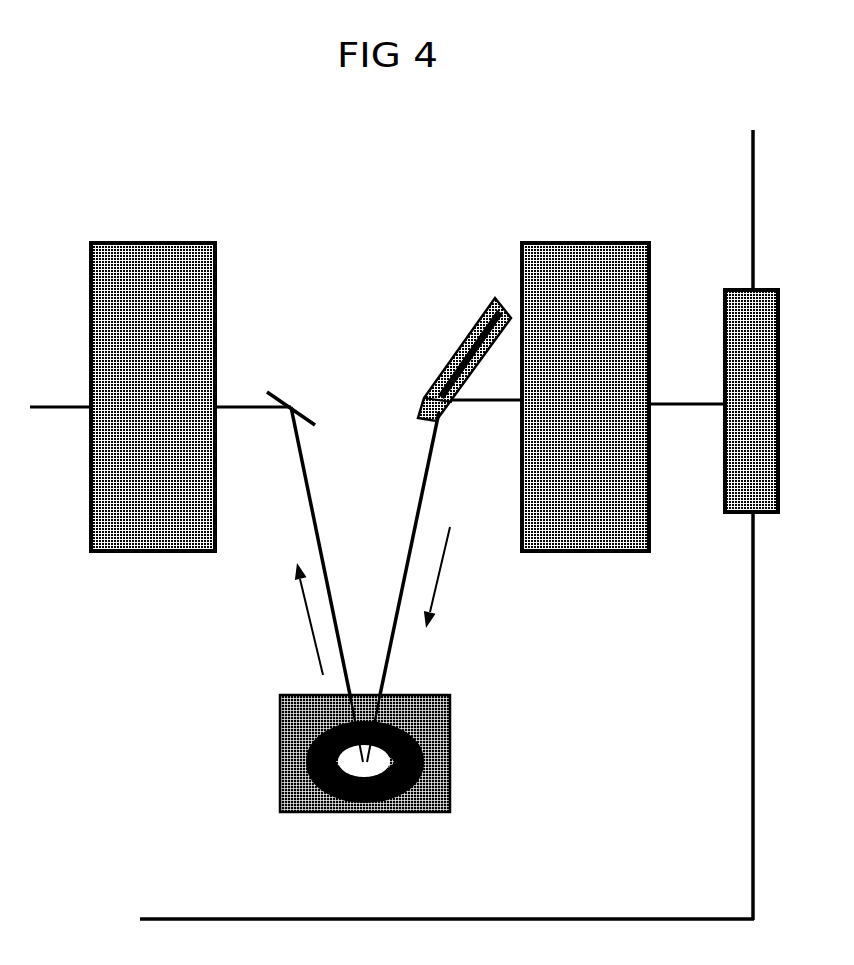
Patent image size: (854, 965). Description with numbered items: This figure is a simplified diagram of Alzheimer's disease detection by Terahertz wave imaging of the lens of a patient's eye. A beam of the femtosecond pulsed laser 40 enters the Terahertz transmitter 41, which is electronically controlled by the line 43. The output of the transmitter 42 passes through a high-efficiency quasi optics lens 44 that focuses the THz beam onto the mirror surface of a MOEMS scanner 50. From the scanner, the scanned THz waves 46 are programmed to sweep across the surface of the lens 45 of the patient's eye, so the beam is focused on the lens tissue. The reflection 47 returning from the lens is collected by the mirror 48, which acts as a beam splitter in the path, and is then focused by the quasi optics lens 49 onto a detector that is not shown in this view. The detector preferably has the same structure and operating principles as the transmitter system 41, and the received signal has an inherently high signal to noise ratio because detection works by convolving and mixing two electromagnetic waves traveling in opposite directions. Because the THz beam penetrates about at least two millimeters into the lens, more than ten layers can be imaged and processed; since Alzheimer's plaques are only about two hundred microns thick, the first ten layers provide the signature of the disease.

The femtosecond pulsed laser beam 40 is at (752, 265).
The Terahertz transmitter 41 is at (757, 497).
The transmitter output 42 is at (672, 405).
The control line 43 is at (672, 910).
The quasi optics lens 44 is at (580, 283).
The lens of the patient's eye 45 is at (450, 695).
The scanned THz waves 46 is at (407, 557).
The reflection 47 is at (296, 450).
The mirror 48 is at (291, 407).
The quasi optics lens 49 is at (150, 318).
The MOEMS scanner 50 is at (463, 340).